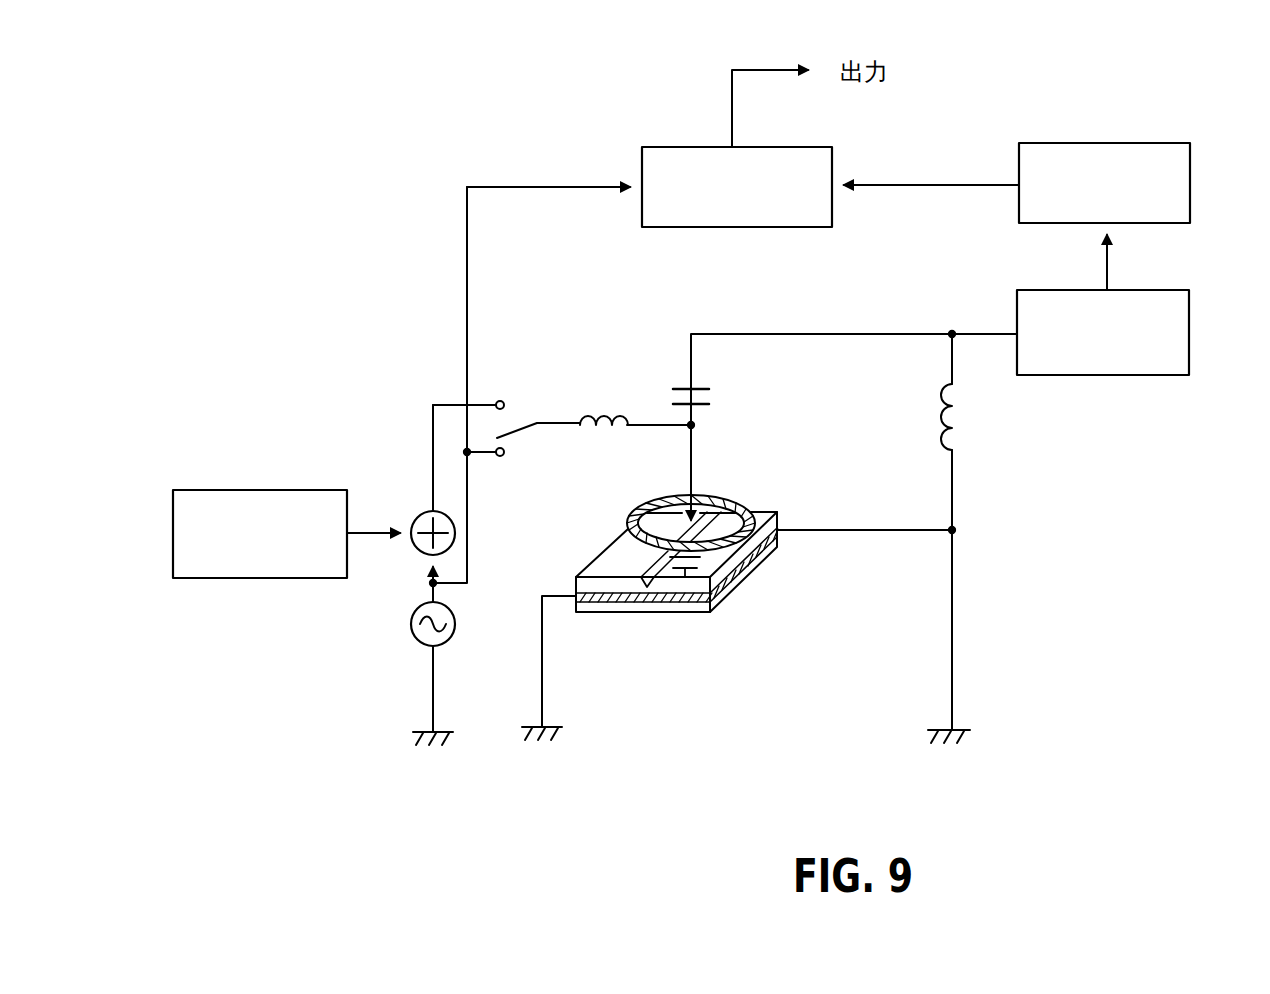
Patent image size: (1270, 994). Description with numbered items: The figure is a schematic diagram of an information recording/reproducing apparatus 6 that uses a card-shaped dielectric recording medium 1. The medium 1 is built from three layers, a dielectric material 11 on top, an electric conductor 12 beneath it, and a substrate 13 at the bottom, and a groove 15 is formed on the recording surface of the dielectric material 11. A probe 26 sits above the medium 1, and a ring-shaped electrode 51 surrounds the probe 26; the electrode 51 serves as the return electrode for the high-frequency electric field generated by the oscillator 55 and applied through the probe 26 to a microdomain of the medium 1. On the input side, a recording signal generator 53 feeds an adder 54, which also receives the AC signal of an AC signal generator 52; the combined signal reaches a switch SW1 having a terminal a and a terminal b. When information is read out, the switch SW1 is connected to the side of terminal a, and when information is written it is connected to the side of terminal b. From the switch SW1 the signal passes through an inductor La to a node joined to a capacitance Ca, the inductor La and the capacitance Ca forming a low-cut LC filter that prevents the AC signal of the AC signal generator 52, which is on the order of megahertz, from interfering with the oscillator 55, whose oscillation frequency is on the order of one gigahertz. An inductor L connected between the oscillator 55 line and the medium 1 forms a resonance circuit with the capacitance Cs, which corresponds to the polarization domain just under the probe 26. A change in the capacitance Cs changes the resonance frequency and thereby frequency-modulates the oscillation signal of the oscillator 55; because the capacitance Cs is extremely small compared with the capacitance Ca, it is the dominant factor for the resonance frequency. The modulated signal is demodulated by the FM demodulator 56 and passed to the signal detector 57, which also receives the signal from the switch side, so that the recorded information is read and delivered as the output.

The dielectric recording medium 1 is at (704, 594).
The dielectric material 11 is at (740, 557).
The electric conductor 12 is at (727, 580).
The substrate 13 is at (794, 591).
The groove 15 is at (650, 570).
The probe 26 is at (647, 517).
The electrode 51 is at (742, 503).
The AC signal generator 52 is at (412, 628).
The recording signal generator 53 is at (312, 578).
The adder 54 is at (418, 513).
The oscillator 55 is at (1180, 290).
The FM demodulator 56 is at (1175, 143).
The signal detector 57 is at (817, 146).
The information recording/reproducing apparatus 6 is at (638, 802).
The switch SW1 is at (518, 440).
The terminal a is at (495, 458).
The terminal b is at (503, 398).
The inductor La is at (614, 416).
The capacitance Ca is at (718, 395).
The inductor L is at (962, 420).
The capacitance Cs is at (676, 570).